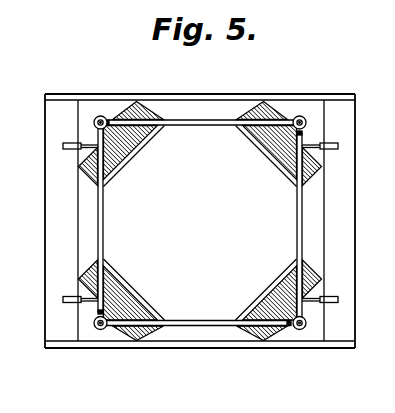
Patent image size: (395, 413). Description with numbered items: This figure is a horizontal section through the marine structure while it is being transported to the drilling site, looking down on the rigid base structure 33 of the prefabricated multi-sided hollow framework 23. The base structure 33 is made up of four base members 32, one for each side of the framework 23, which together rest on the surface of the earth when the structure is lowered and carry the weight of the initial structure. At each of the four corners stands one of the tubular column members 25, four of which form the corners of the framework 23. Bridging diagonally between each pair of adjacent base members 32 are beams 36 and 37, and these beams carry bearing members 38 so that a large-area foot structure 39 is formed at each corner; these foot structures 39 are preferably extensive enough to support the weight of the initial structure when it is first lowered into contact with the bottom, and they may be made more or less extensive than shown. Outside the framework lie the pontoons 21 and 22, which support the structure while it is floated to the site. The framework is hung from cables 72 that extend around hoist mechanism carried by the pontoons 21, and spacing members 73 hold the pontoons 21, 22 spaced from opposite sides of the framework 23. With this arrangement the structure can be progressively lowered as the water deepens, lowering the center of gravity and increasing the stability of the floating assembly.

The pontoon 21 is at (346, 125).
The pontoon 22 is at (55, 124).
The multi-sided hollow framework 23 is at (101, 110).
The tubular column member 25 is at (300, 116).
The base member 32 is at (216, 126).
The base structure 33 is at (244, 107).
The beam 36 is at (200, 223).
The beam 37 is at (122, 118).
The bearing member 38 is at (138, 167).
The foot structure 39 is at (142, 158).
The cable 72 is at (83, 151).
The spacing member 73 is at (170, 96).